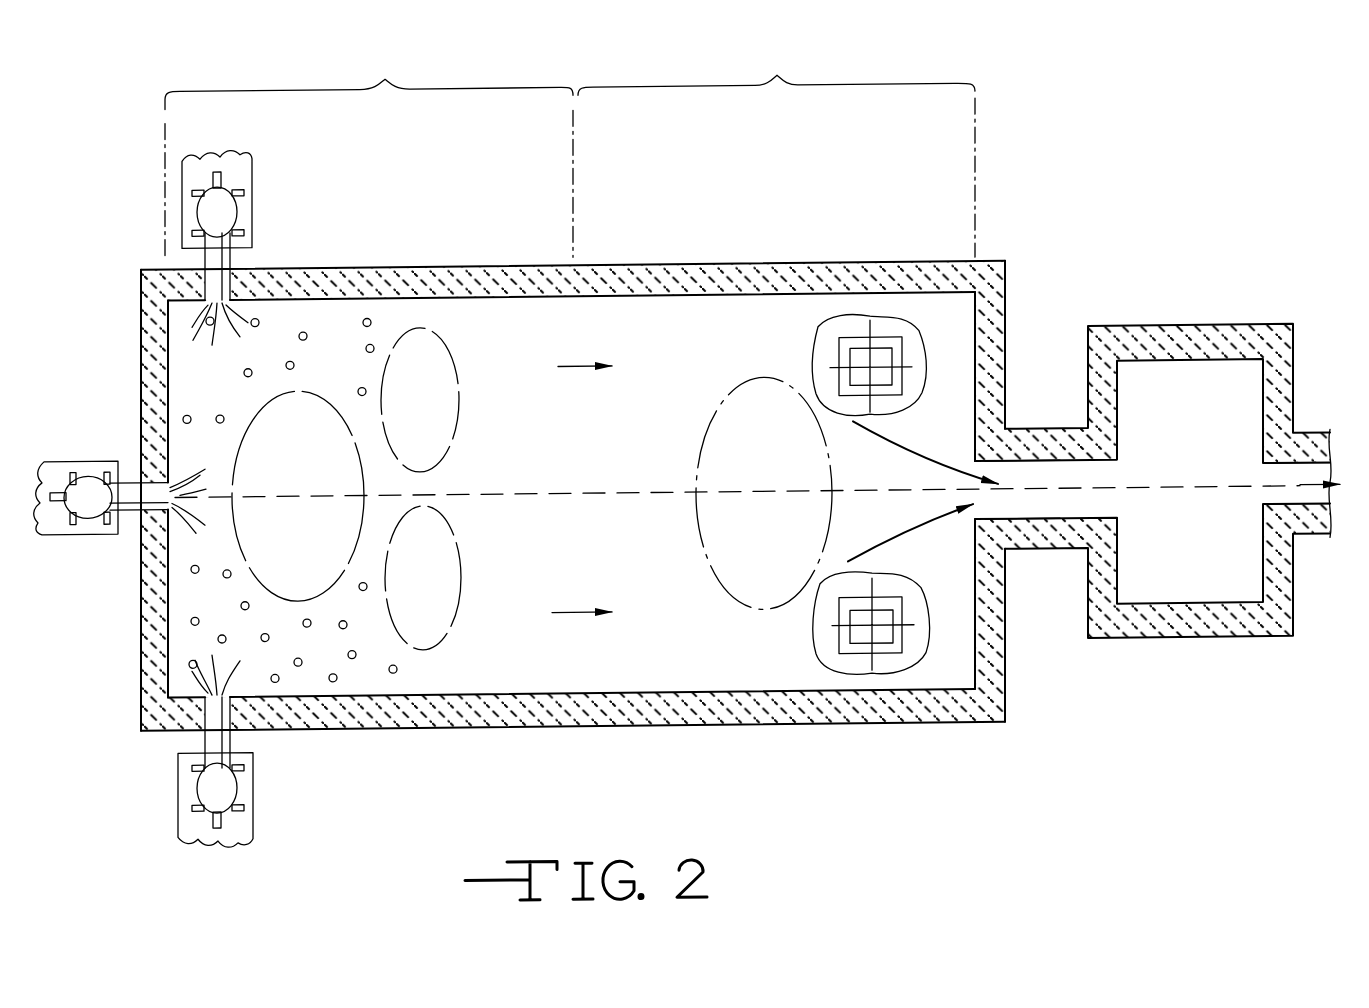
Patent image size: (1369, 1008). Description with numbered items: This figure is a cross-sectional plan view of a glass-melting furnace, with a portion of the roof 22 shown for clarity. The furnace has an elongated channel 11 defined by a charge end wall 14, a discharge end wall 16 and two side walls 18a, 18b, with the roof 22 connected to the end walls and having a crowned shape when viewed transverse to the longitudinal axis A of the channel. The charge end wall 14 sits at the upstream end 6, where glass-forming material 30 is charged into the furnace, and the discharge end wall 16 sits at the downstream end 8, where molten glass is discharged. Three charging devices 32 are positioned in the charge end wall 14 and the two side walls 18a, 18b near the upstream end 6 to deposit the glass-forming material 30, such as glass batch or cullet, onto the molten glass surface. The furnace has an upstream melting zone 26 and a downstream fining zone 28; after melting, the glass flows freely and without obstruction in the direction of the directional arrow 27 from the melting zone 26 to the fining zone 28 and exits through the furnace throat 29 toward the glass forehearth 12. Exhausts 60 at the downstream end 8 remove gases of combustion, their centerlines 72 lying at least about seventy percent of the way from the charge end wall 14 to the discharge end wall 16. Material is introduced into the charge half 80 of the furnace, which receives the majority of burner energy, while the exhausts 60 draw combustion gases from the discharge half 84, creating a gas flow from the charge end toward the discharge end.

The upstream end 6 is at (700, 438).
The downstream end 8 is at (1171, 562).
The elongated channel 11 is at (634, 667).
The glass forehearth 12 is at (1338, 480).
The charge end wall 14 is at (142, 626).
The discharge end wall 16 is at (1010, 308).
The side wall 18a is at (655, 264).
The side wall 18b is at (663, 728).
The roof 22 is at (846, 318).
The melting zone 26 is at (280, 481).
The directional arrow 27 is at (578, 365).
The fining zone 28 is at (855, 502).
The furnace throat 29 is at (1033, 484).
The glass-forming material 30 is at (250, 366).
The charging device 32 is at (255, 168).
The exhaust 60 is at (905, 373).
The centerline 72 is at (893, 320).
The charge half 80 is at (369, 146).
The discharge half 84 is at (774, 146).
The longitudinal axis A is at (668, 493).